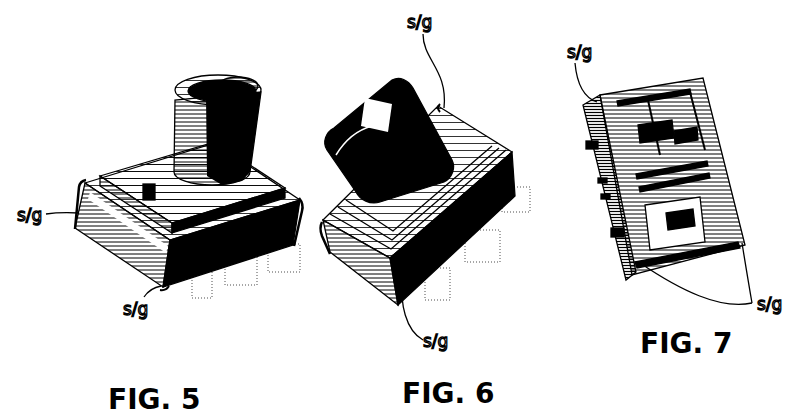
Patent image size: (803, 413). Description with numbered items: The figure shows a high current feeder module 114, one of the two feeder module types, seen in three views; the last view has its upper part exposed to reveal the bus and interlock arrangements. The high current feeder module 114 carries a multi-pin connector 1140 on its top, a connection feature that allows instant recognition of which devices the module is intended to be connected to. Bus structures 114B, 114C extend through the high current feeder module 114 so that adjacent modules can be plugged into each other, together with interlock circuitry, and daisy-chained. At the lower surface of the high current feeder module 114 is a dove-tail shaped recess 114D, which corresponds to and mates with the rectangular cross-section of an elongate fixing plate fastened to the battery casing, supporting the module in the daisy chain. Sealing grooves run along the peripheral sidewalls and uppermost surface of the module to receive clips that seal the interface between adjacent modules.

In FIG. 5, the high current feeder module 114 is at (117, 233).
In FIG. 6, the high current feeder module 114 is at (481, 130).
In FIG. 7, the high current feeder module 114 is at (693, 92).
In FIG. 5, the multi-pin connector 1140 is at (173, 128).
In FIG. 6, the multi-pin connector 1140 is at (372, 100).
In FIG. 5, the bus structure 114B is at (199, 264).
In FIG. 6, the bus structure 114B is at (497, 190).
In FIG. 7, the bus structure 114B is at (668, 130).
In FIG. 5, the bus structure 114C is at (244, 254).
In FIG. 6, the bus structure 114C is at (453, 230).
In FIG. 7, the bus structure 114C is at (692, 163).
In FIG. 5, the dove-tail shaped recess 114D is at (222, 262).
In FIG. 6, the dove-tail shaped recess 114D is at (482, 224).